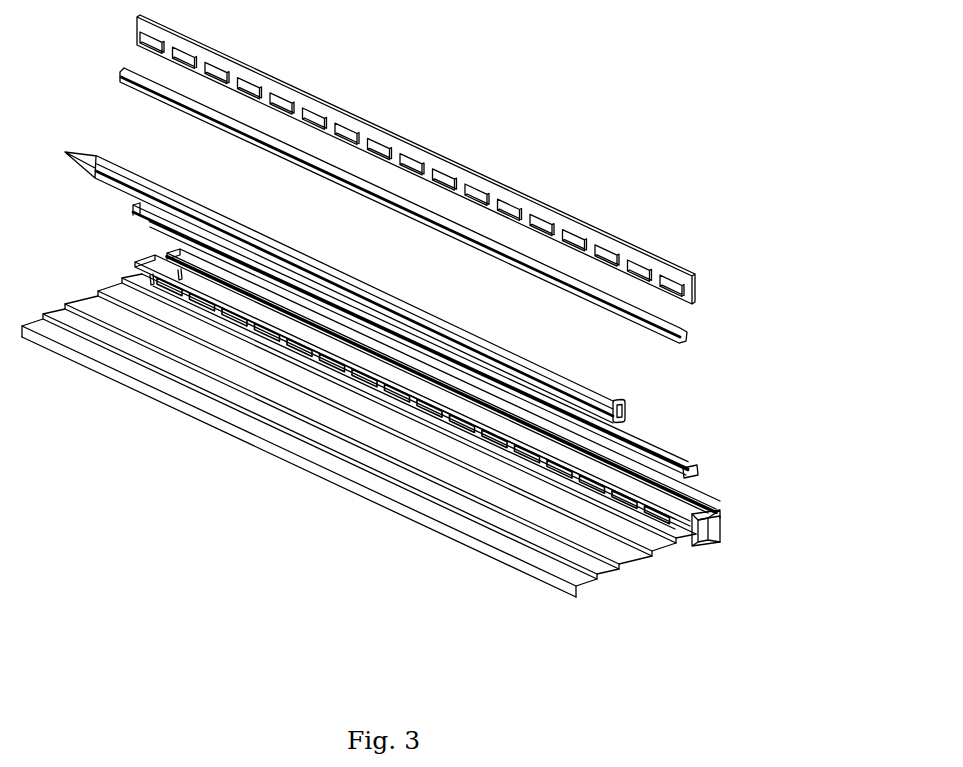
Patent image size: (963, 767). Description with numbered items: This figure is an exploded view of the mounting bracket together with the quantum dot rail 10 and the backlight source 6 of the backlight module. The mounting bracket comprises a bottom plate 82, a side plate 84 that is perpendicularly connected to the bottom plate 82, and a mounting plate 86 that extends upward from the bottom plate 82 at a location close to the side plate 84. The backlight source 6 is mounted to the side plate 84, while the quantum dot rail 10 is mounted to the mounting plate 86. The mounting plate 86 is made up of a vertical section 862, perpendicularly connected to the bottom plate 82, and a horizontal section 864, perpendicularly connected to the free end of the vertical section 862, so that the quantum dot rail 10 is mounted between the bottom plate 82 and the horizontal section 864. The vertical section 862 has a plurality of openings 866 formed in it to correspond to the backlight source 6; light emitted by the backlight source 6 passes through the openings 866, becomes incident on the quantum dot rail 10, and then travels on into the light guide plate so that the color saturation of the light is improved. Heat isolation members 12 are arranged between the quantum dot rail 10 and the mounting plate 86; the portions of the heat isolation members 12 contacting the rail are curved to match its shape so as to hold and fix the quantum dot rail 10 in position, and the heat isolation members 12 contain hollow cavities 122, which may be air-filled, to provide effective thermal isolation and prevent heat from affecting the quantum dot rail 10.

The backlight source 6 is at (623, 248).
The quantum dot rail 10 is at (588, 393).
The heat isolation members 12 is at (465, 340).
The hollow cavities 122 is at (698, 472).
The side plate 84 is at (687, 488).
The bottom plate 82 is at (493, 532).
The mounting plate 86 is at (780, 561).
The horizontal section 864 is at (703, 510).
The vertical section 862 is at (708, 537).
The openings 866 is at (698, 538).